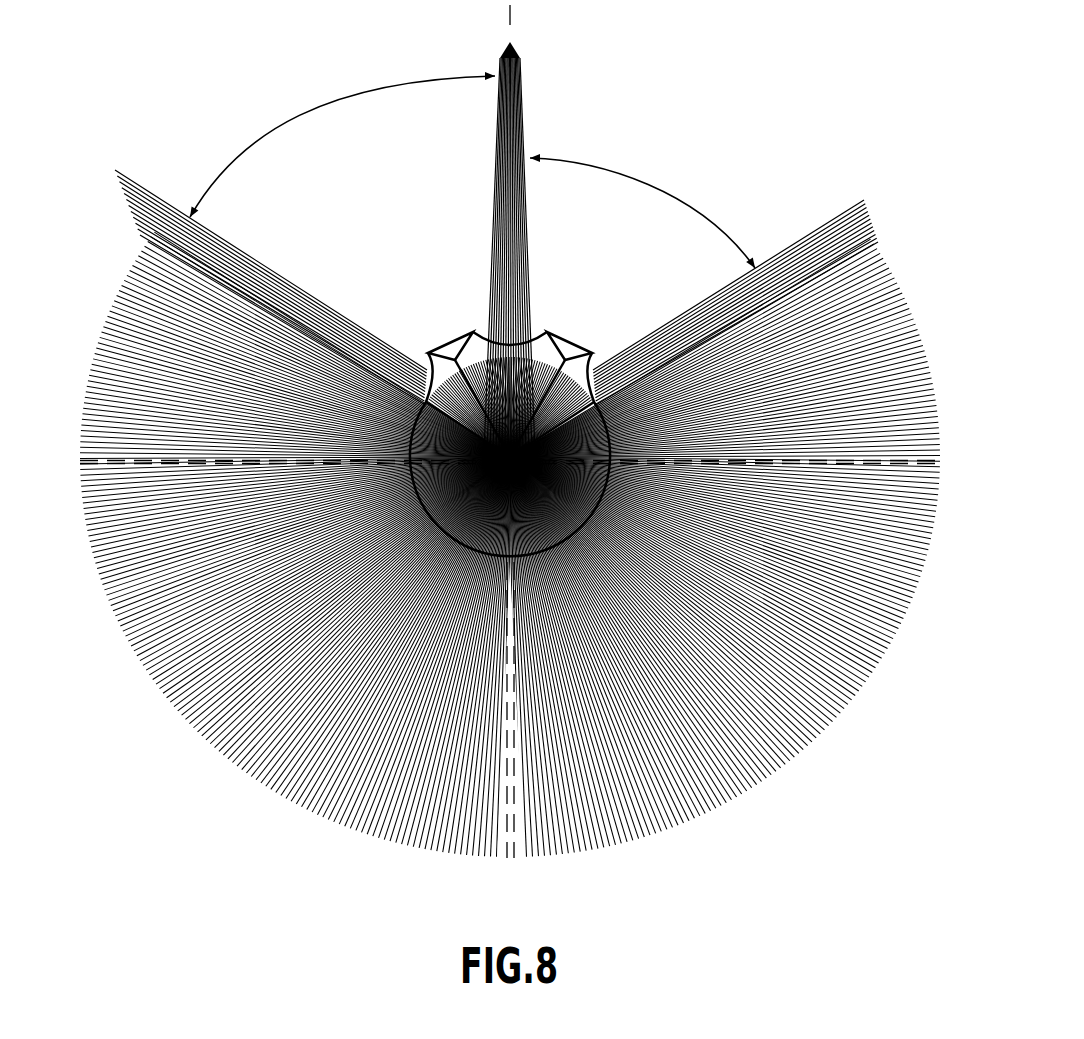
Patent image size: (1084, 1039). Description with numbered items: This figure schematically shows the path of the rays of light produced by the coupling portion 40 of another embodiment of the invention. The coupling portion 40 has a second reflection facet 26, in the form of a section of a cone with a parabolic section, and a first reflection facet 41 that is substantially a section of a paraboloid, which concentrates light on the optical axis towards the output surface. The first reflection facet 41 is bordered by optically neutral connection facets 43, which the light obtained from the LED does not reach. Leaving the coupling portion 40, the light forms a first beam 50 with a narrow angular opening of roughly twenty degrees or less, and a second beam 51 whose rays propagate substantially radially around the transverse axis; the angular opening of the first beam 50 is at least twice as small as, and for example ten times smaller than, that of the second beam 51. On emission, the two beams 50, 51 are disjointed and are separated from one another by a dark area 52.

The second reflection facet 26 is at (433, 462).
The coupling portion 40 is at (428, 295).
The first reflection facet 41 is at (522, 293).
The connection facets 43 is at (447, 340).
The first beam 50 is at (522, 120).
The second beam 51 is at (827, 232).
The dark area 52 is at (472, 170).